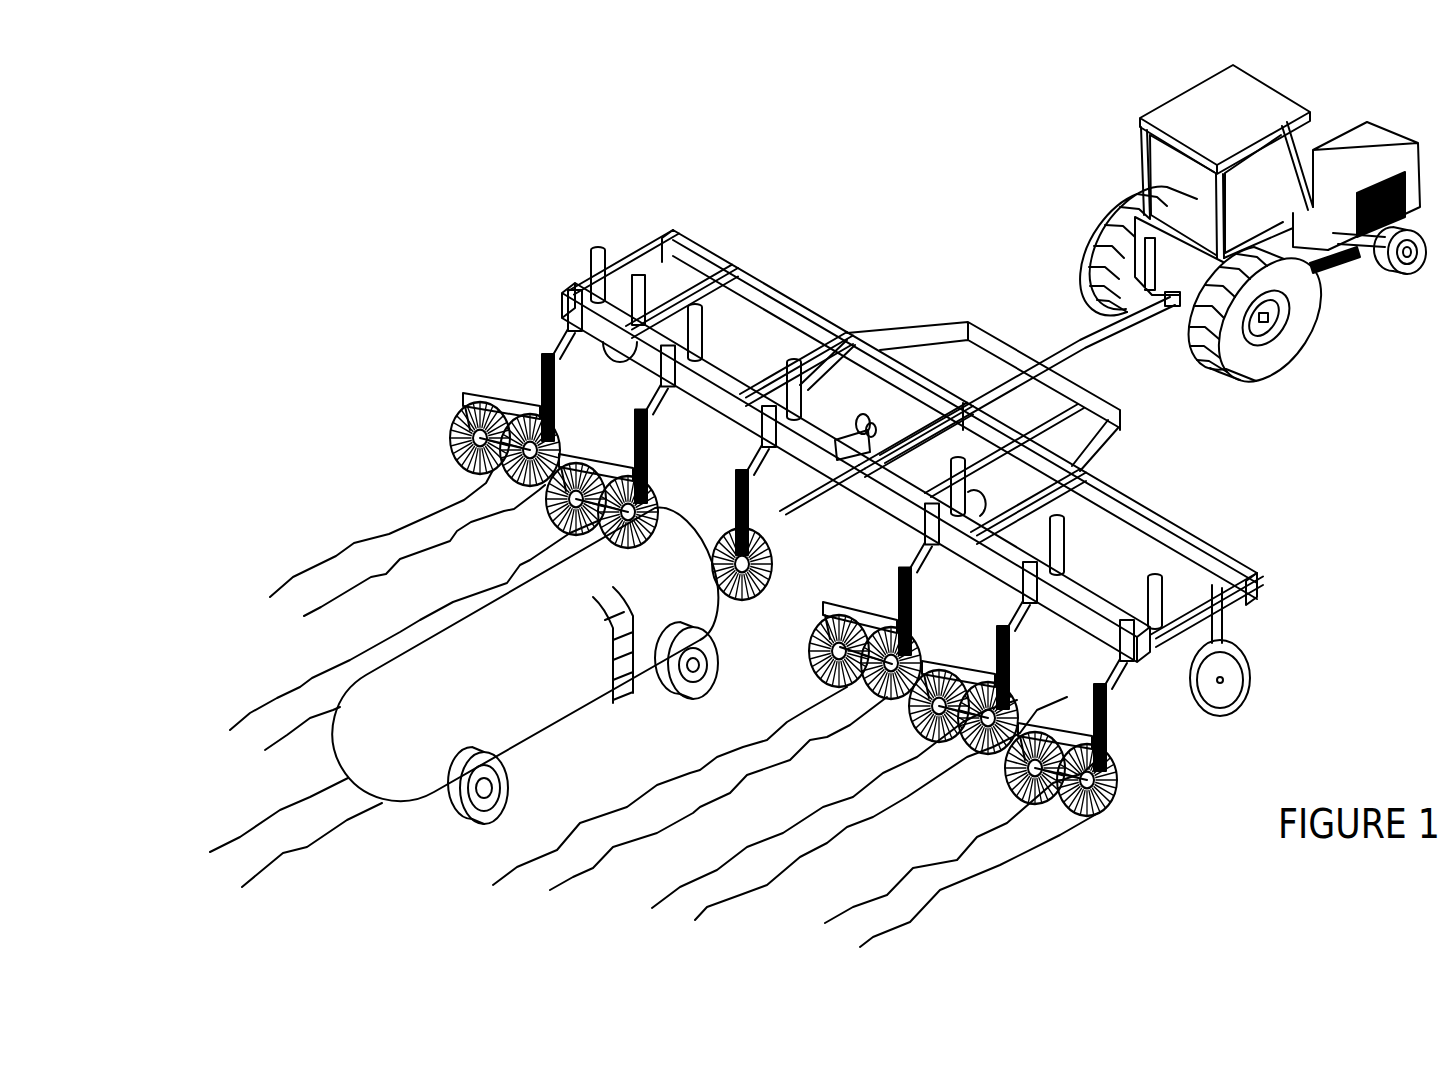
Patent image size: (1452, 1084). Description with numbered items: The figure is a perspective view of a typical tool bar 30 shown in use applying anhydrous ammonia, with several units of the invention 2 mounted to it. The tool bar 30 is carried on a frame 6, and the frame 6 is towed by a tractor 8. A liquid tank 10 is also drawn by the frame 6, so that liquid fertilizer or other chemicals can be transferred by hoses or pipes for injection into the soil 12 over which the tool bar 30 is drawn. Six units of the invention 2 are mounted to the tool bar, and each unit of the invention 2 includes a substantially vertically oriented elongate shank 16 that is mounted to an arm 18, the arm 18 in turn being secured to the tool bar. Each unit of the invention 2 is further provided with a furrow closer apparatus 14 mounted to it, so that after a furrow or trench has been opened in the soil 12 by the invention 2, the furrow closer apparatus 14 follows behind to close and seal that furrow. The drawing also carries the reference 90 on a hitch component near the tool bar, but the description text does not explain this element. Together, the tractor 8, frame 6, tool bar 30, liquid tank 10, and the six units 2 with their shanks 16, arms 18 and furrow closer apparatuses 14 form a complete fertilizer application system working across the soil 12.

The invention unit 2 is at (842, 574).
The frame 6 is at (1222, 549).
The tractor 8 is at (1338, 287).
The liquid tank 10 is at (543, 716).
The soil 12 is at (998, 868).
The furrow closer apparatus 14 is at (997, 707).
The shank 16 is at (633, 433).
The arm 18 is at (928, 568).
The tool bar 30 is at (1090, 590).
The hitch pivot 90 is at (847, 432).